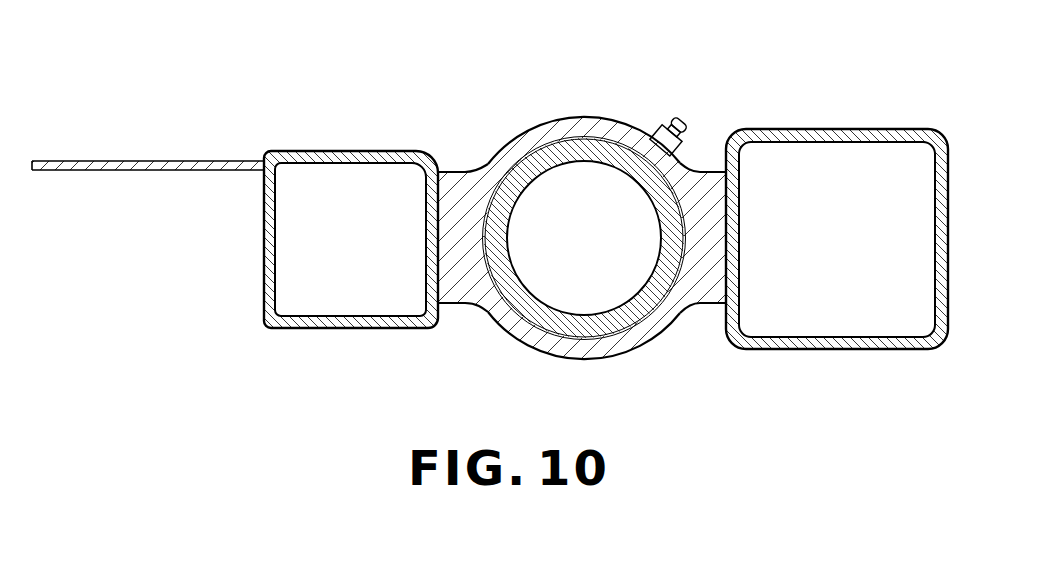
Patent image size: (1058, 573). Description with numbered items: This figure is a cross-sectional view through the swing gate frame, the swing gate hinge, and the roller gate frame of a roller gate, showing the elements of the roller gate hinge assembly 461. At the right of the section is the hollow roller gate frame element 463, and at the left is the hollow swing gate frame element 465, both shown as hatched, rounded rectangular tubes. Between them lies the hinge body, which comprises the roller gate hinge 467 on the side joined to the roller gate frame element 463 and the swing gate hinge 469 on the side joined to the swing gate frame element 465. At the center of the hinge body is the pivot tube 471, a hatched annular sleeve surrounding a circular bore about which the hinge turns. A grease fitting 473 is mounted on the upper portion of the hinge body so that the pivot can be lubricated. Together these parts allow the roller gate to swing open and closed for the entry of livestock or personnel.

The roller gate hinge assembly 461 is at (549, 104).
The roller gate frame element 463 is at (840, 350).
The swing gate frame element 465 is at (264, 283).
The roller gate hinge 467 is at (695, 304).
The swing gate hinge 469 is at (473, 177).
The pivot tube 471 is at (602, 157).
The grease fitting 473 is at (685, 121).